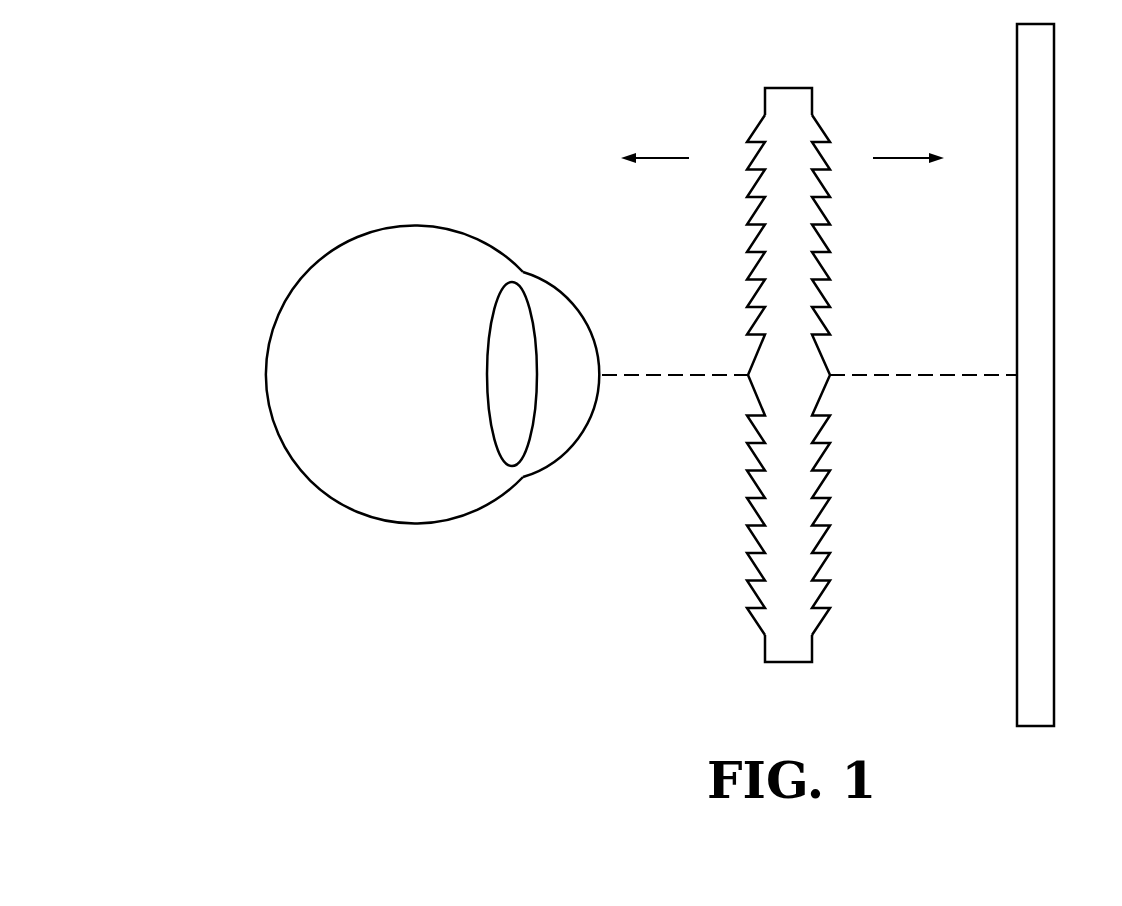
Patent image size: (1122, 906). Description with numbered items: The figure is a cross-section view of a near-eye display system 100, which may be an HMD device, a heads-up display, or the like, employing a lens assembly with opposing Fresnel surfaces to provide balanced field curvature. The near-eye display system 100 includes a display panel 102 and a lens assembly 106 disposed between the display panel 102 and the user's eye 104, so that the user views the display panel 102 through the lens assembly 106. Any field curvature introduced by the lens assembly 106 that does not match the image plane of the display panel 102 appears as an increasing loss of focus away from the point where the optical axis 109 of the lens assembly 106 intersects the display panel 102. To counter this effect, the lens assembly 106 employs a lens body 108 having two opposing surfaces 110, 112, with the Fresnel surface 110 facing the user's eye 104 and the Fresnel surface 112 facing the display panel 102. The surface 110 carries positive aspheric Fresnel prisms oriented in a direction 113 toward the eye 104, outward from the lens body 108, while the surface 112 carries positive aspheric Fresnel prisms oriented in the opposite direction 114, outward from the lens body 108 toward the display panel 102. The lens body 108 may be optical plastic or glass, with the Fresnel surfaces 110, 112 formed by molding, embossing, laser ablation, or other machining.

The near-eye display system 100 is at (438, 135).
The display panel 102 is at (1055, 310).
The user's eye 104 is at (264, 397).
The lens assembly 106 is at (789, 370).
The lens body 108 is at (788, 640).
The optical axis 109 is at (920, 374).
The Fresnel surface 110 is at (729, 169).
The Fresnel surface 112 is at (847, 169).
The direction toward the eye 113 is at (660, 157).
The direction toward the display panel 114 is at (912, 157).